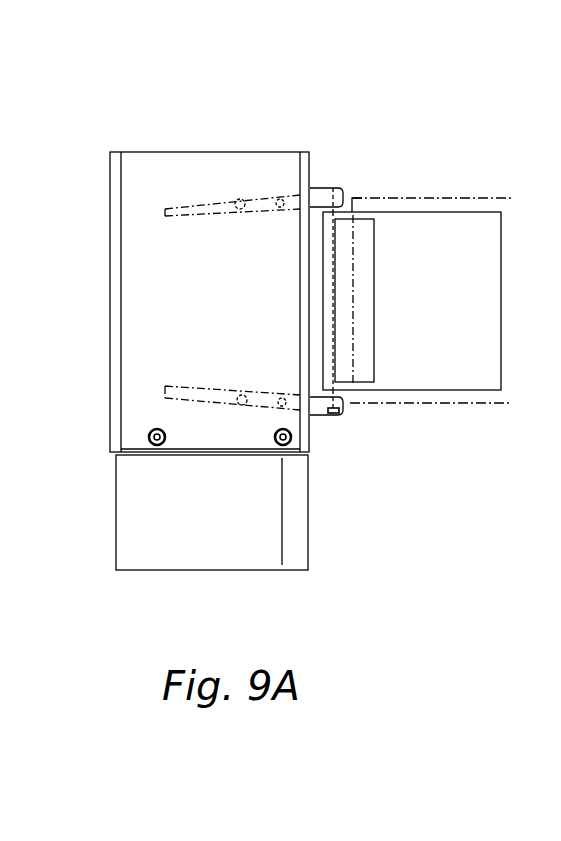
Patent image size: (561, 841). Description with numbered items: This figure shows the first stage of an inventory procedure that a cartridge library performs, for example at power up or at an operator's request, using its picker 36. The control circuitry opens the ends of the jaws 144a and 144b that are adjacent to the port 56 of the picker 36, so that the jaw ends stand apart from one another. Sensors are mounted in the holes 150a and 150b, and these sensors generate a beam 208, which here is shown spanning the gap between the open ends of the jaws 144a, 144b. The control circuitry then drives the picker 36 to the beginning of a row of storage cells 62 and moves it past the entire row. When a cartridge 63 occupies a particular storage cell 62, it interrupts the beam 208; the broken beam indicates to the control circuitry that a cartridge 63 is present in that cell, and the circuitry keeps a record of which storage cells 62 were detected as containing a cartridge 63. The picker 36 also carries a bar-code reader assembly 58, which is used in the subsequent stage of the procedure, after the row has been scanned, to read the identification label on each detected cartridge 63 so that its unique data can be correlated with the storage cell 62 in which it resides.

The picker 36 is at (170, 134).
The port 56 is at (322, 441).
The bar-code reader assembly 58 is at (296, 571).
The storage cell 62 is at (455, 403).
The cartridge 63 is at (443, 320).
The jaw 144a is at (266, 194).
The jaw 144b is at (270, 405).
The hole 150a is at (333, 190).
The hole 150b is at (340, 413).
The beam 208 is at (330, 213).